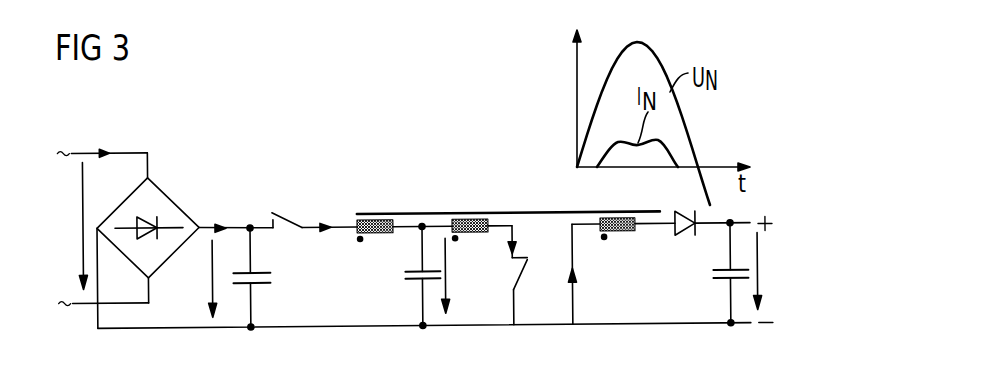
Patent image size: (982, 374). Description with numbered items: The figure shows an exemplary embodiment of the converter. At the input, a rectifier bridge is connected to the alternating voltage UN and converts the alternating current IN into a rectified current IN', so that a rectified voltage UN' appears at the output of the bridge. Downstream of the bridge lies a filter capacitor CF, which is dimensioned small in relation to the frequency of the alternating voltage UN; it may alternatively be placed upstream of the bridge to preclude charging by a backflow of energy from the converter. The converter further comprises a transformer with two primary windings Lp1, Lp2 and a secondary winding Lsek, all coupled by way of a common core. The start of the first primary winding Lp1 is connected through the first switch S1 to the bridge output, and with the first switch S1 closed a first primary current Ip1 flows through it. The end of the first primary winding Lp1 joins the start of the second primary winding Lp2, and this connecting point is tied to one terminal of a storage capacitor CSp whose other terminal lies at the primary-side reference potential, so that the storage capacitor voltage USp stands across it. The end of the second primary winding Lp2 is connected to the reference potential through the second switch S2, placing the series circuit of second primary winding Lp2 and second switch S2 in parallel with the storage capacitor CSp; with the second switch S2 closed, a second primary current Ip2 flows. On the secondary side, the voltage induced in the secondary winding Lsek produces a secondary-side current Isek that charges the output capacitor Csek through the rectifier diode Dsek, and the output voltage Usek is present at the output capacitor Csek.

The alternating current IN is at (109, 138).
The alternating voltage UN is at (69, 225).
The rectified current IN' is at (227, 212).
The rectified voltage UN' is at (197, 278).
The first switch S1 is at (287, 215).
The first primary current Ip1 is at (333, 208).
The filter capacitor CF is at (272, 277).
The first primary winding Lp1 is at (375, 237).
The storage capacitor CSp is at (404, 277).
The storage capacitor voltage USp is at (466, 277).
The second primary winding Lp2 is at (470, 237).
The second primary current Ip2 is at (516, 239).
The second switch S2 is at (521, 278).
The secondary-side current Isek is at (592, 274).
The secondary winding Lsek is at (625, 237).
The rectifier diode Dsek is at (682, 240).
The output capacitor Csek is at (712, 280).
The output voltage Usek is at (782, 270).